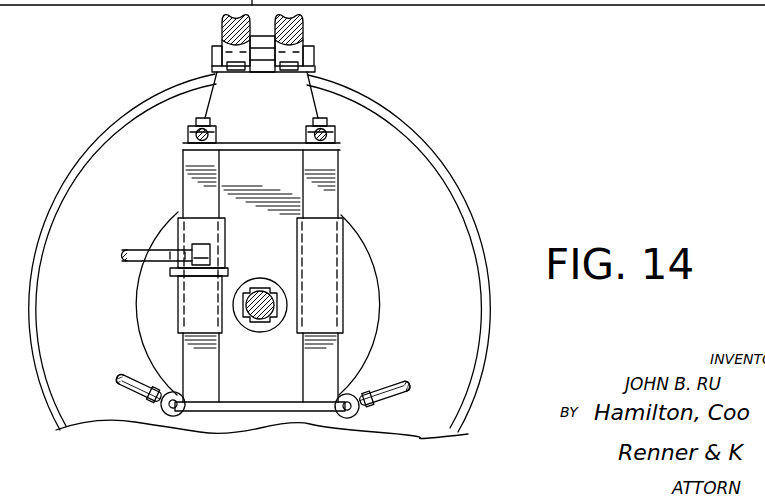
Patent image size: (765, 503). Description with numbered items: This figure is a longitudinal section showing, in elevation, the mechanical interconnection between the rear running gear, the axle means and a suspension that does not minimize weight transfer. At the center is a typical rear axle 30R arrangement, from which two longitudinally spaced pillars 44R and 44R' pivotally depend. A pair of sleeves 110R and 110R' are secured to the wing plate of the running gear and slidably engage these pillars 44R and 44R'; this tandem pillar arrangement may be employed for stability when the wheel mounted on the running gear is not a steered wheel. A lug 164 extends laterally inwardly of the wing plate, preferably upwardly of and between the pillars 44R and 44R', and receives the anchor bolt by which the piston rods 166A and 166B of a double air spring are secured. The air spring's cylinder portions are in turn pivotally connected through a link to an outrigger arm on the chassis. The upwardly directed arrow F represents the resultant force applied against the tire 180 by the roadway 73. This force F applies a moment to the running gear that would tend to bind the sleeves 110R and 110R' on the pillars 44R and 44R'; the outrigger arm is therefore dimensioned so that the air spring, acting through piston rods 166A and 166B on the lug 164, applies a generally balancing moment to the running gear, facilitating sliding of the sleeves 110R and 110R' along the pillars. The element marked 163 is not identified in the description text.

The tire 180 is at (90, 12).
The resultant force F is at (148, 10).
The piston rod 166A is at (222, 33).
The piston rod 166B is at (306, 33).
The lug 164 is at (304, 66).
The roadway 73 is at (598, 6).
The pillar 44R is at (157, 184).
The pillar 44R' is at (360, 184).
The sleeve 110R is at (161, 272).
The sleeve 110R' is at (367, 275).
The shaft hub 163 is at (284, 301).
The rear axle 30R is at (278, 352).